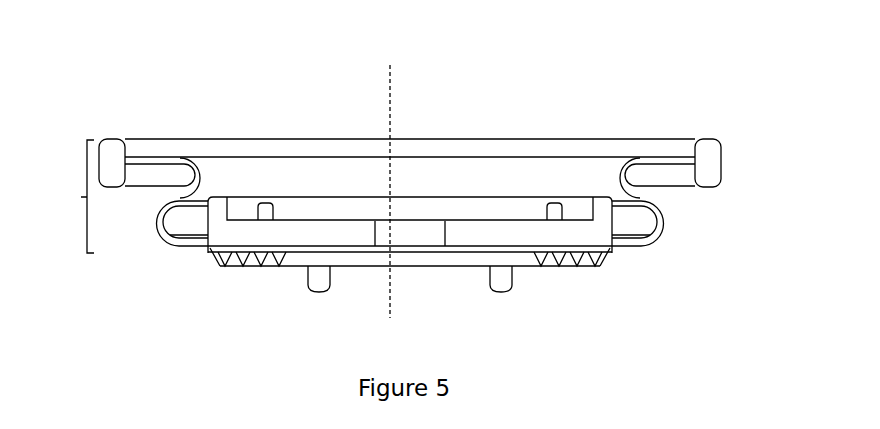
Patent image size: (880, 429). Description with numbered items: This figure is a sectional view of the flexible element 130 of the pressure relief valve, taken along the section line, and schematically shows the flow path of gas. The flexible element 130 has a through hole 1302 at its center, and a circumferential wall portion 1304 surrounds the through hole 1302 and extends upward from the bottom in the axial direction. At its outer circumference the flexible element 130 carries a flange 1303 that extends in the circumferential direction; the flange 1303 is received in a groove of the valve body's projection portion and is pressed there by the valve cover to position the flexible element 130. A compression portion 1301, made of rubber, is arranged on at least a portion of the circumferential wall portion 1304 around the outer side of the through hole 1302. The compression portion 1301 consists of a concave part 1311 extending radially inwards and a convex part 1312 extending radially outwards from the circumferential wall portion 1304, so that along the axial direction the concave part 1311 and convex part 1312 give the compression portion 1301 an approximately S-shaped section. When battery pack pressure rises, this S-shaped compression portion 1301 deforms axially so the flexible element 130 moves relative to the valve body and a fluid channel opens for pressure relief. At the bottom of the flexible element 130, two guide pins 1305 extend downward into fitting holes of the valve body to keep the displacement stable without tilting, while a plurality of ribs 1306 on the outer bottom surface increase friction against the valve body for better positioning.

The flexible element 130 is at (657, 72).
The compression portion 1301 is at (682, 202).
The through hole 1302 is at (407, 255).
The flange 1303 is at (720, 153).
The circumferential wall portion 1304 is at (76, 200).
The guide pins 1305 is at (510, 278).
The ribs 1306 is at (222, 268).
The concave part 1311 is at (632, 167).
The convex part 1312 is at (662, 229).